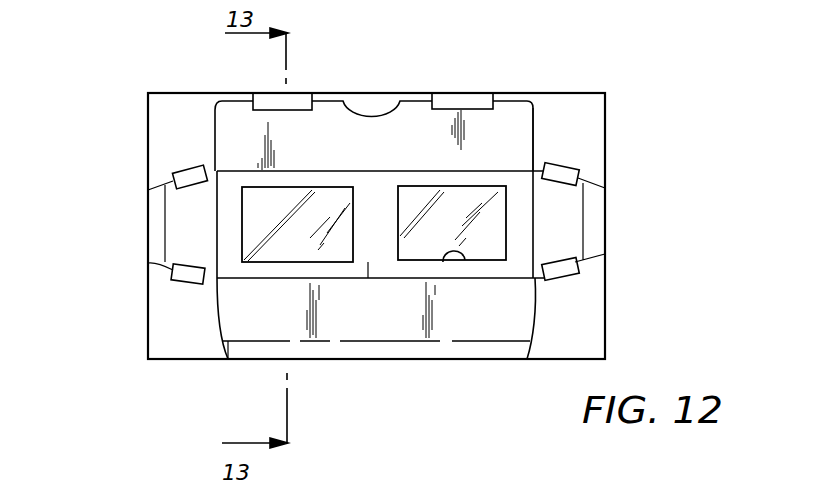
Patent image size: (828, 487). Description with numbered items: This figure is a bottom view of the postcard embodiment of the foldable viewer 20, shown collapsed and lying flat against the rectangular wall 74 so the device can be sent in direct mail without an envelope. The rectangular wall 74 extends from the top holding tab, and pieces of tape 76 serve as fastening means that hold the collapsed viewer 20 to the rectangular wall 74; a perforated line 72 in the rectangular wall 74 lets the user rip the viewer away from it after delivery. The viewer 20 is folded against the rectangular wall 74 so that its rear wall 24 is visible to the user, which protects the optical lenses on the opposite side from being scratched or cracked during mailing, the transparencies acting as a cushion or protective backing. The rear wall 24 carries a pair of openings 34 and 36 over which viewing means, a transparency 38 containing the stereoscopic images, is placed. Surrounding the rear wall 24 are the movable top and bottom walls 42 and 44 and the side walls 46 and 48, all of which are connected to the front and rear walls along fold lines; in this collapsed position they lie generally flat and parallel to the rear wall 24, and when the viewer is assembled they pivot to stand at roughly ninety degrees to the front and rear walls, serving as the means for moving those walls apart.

The rectangular wall 74 is at (158, 112).
The foldable viewer 20 is at (410, 110).
The top wall 42 is at (523, 127).
The side wall 46 is at (180, 232).
The side wall 48 is at (572, 227).
The pieces of tape 76 is at (298, 99).
The opening 36 is at (287, 262).
The transparency 38 is at (488, 232).
The opening 34 is at (443, 262).
The rear wall 24 is at (368, 262).
The bottom wall 44 is at (397, 328).
The perforated line 72 is at (228, 362).